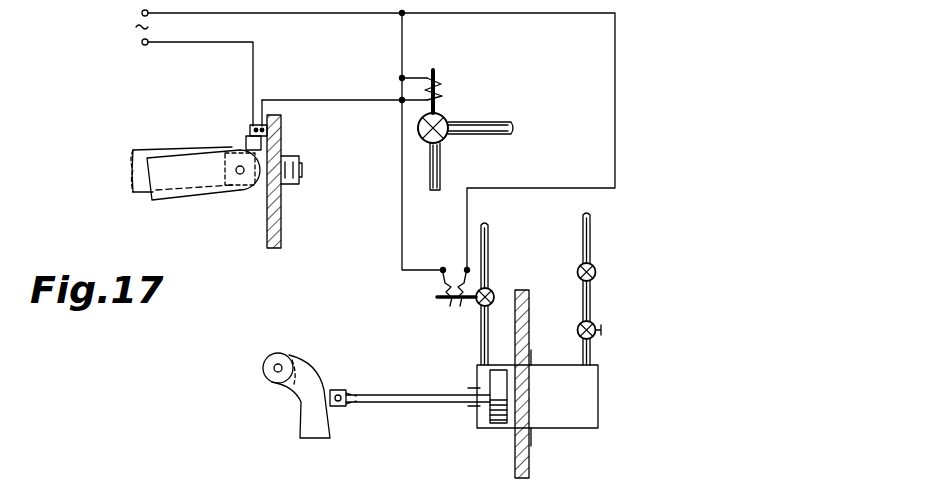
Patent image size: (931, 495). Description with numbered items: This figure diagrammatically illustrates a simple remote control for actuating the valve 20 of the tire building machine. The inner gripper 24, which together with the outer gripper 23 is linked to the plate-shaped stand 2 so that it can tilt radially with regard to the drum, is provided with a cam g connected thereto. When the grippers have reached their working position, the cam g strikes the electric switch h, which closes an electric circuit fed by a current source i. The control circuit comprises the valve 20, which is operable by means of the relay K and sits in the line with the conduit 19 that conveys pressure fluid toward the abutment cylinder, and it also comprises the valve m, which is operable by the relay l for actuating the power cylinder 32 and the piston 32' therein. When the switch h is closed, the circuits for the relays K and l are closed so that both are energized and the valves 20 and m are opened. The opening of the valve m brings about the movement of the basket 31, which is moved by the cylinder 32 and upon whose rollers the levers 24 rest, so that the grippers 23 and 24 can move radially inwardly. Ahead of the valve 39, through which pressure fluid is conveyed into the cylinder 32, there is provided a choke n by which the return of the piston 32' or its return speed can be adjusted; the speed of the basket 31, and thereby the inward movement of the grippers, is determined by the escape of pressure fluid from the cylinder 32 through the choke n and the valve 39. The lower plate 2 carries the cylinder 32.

The current source i is at (141, 41).
The relay K is at (441, 84).
The valve 20 is at (446, 118).
The conduit 19 is at (485, 136).
The electric switch h is at (250, 126).
The cam g is at (240, 133).
The stand 2 is at (281, 222).
The outer gripper 23 is at (138, 150).
The inner gripper 24 is at (205, 192).
The relay l is at (448, 308).
The valve m is at (492, 291).
The valve 39 is at (596, 273).
The choke n is at (593, 338).
The power cylinder 32 is at (553, 396).
The piston 32' is at (484, 412).
The basket 31 is at (318, 418).